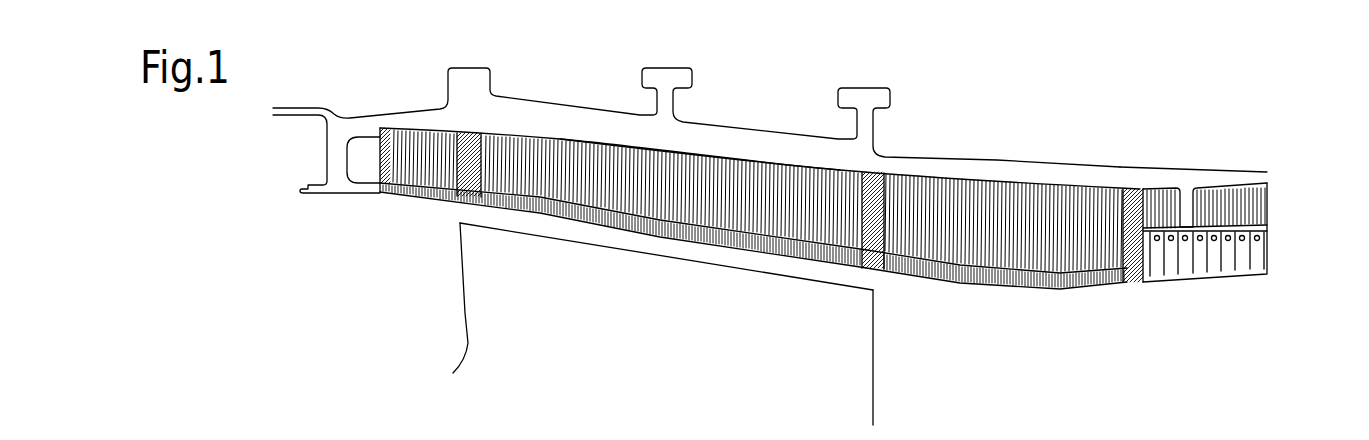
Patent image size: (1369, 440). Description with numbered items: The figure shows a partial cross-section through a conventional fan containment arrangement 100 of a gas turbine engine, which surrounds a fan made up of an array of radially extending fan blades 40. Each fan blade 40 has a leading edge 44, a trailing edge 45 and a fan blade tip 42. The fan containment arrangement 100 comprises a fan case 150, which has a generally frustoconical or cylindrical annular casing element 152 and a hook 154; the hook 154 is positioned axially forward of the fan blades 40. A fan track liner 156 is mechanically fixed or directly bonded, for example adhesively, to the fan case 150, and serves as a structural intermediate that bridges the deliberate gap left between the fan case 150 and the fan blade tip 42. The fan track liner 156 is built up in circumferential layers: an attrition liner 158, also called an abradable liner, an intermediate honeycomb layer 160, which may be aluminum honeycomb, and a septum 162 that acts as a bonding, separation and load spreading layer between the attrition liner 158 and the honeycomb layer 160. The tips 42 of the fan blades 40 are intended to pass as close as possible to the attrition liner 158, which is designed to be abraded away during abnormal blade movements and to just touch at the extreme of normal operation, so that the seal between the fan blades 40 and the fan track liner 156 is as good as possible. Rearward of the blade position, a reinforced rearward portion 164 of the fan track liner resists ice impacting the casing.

The fan containment arrangement 100 is at (920, 45).
The fan case 150 is at (977, 170).
The annular casing element 152 is at (1102, 168).
The hook 154 is at (347, 183).
The fan track liner 156 is at (493, 127).
The attrition liner 158 is at (647, 222).
The honeycomb layer 160 is at (732, 178).
The septum 162 is at (794, 205).
The reinforced rearward portion 164 is at (1087, 283).
The fan blade 40 is at (507, 307).
The fan blade tip 42 is at (536, 210).
The leading edge 44 is at (433, 251).
The trailing edge 45 is at (877, 362).